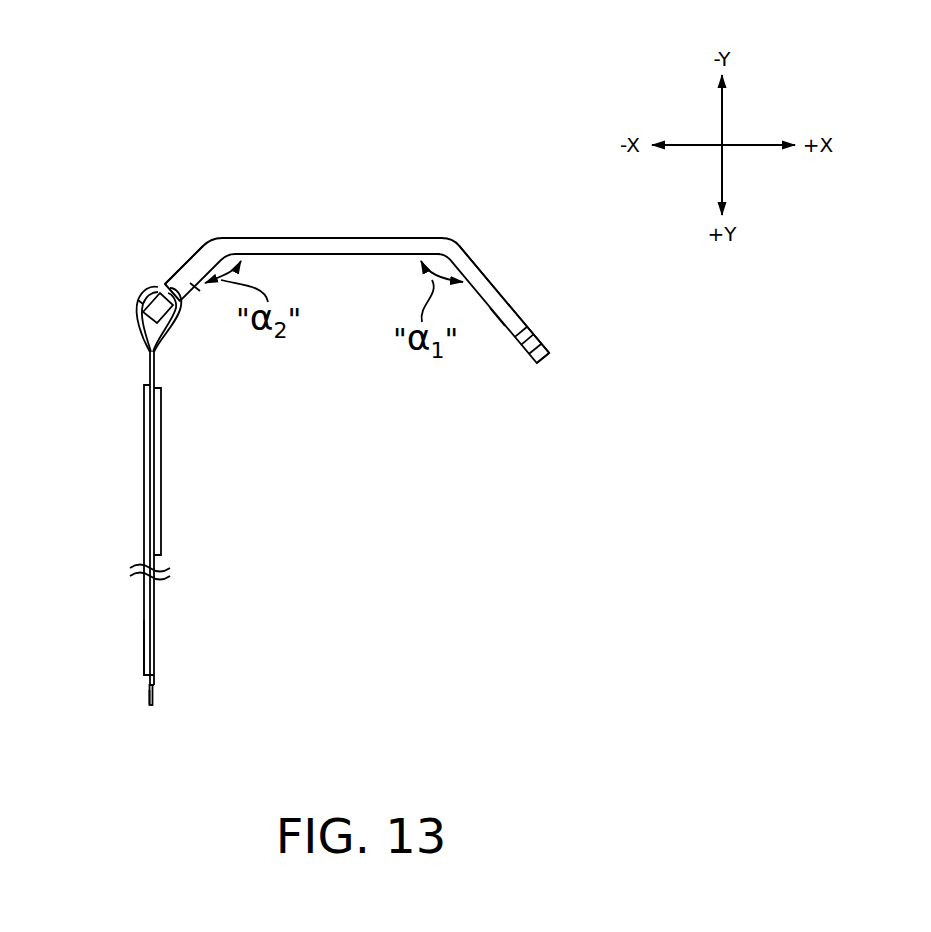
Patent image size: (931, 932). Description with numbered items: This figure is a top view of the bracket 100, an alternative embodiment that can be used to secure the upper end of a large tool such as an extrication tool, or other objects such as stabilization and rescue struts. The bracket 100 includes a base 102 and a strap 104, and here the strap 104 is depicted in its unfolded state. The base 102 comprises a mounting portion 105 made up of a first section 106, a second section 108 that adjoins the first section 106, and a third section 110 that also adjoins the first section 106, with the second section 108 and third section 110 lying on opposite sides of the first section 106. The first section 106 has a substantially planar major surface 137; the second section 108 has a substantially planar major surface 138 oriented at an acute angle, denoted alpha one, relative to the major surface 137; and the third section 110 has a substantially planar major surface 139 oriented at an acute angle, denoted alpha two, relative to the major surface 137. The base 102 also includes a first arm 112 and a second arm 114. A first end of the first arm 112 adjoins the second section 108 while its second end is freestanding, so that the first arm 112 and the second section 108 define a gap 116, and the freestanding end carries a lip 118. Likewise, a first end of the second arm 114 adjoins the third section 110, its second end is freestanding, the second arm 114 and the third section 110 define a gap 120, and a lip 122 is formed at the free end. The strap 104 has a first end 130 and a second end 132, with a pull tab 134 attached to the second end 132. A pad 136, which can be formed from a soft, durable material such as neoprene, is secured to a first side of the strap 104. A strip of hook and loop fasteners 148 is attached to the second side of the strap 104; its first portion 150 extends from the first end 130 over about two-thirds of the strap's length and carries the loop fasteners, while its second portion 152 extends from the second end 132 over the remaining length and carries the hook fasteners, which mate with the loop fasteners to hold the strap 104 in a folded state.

The bracket 100 is at (466, 172).
The base 102 is at (377, 236).
The strap 104 is at (147, 697).
The mounting portion 105 is at (263, 236).
The first section 106 is at (309, 252).
The second section 108 is at (474, 258).
The third section 110 is at (199, 262).
The first arm 112 is at (546, 357).
The second arm 114 is at (143, 300).
The gap 116 is at (527, 326).
The lip 118 is at (531, 331).
The gap 120 is at (163, 290).
The lip 122 is at (163, 298).
The first end 130 is at (135, 338).
The second end 132 is at (161, 678).
The pull tab 134 is at (155, 702).
The pad 136 is at (163, 430).
The major surface 137 is at (339, 256).
The major surface 138 is at (496, 316).
The major surface 139 is at (195, 292).
The strip of hook and loop fasteners 148 is at (141, 402).
The first portion 150 is at (143, 466).
The second portion 152 is at (143, 660).